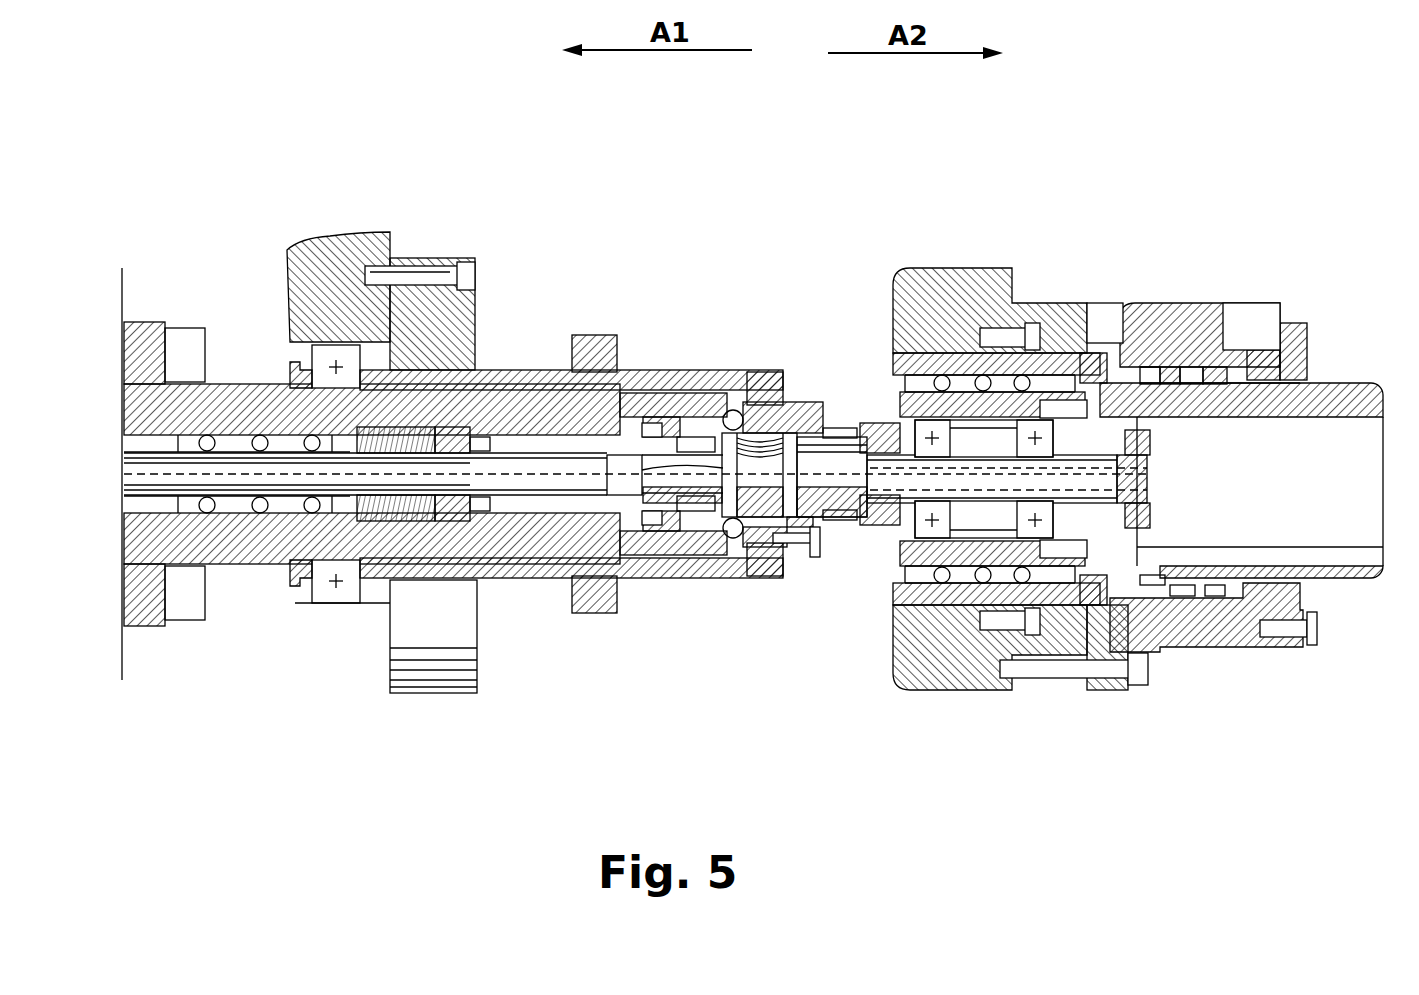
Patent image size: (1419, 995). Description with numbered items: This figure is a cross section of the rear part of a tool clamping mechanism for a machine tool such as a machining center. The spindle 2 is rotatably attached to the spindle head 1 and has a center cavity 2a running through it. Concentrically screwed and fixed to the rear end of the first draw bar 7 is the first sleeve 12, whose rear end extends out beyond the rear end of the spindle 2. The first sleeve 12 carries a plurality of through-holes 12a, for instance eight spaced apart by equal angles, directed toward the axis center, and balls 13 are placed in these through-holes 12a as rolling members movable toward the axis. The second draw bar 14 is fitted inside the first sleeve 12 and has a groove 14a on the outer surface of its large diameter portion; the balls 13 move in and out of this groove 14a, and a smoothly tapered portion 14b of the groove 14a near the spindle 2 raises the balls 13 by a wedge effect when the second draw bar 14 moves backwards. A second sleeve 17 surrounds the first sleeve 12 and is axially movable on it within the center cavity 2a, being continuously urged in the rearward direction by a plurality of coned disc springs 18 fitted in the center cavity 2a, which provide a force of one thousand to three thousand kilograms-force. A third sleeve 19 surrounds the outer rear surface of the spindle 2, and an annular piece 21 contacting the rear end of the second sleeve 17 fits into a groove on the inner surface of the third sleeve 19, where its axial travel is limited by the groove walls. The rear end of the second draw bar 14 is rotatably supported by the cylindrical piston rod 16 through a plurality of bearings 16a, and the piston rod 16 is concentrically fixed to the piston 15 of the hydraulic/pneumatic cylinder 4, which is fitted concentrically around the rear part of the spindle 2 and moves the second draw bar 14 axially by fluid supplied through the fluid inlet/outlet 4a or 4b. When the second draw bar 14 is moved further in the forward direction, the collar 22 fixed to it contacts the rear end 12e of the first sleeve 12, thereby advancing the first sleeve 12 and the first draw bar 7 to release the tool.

The spindle head 1 is at (342, 277).
The spindle 2 is at (223, 400).
The center cavity 2a is at (278, 445).
The first draw bar 7 is at (223, 473).
The coned disc springs 18 is at (383, 523).
The first sleeve 12 is at (635, 393).
The through-holes 12a is at (738, 405).
The rear end of the first sleeve 12e is at (838, 428).
The annular piece 21 is at (703, 393).
The balls 13 is at (736, 538).
The second draw bar 14 is at (840, 553).
The groove 14a is at (770, 557).
The tapered portion 14b is at (792, 402).
The second sleeve 17 is at (640, 530).
The third sleeve 19 is at (672, 577).
The collar 22 is at (873, 560).
The cylindrical piston rod 16 is at (890, 405).
The bearings 16a is at (930, 423).
The hydraulic/pneumatic cylinder 4 is at (1150, 338).
The fluid inlet/outlet 4a is at (1248, 330).
The fluid inlet/outlet 4b is at (1098, 325).
The piston 15 is at (1200, 365).